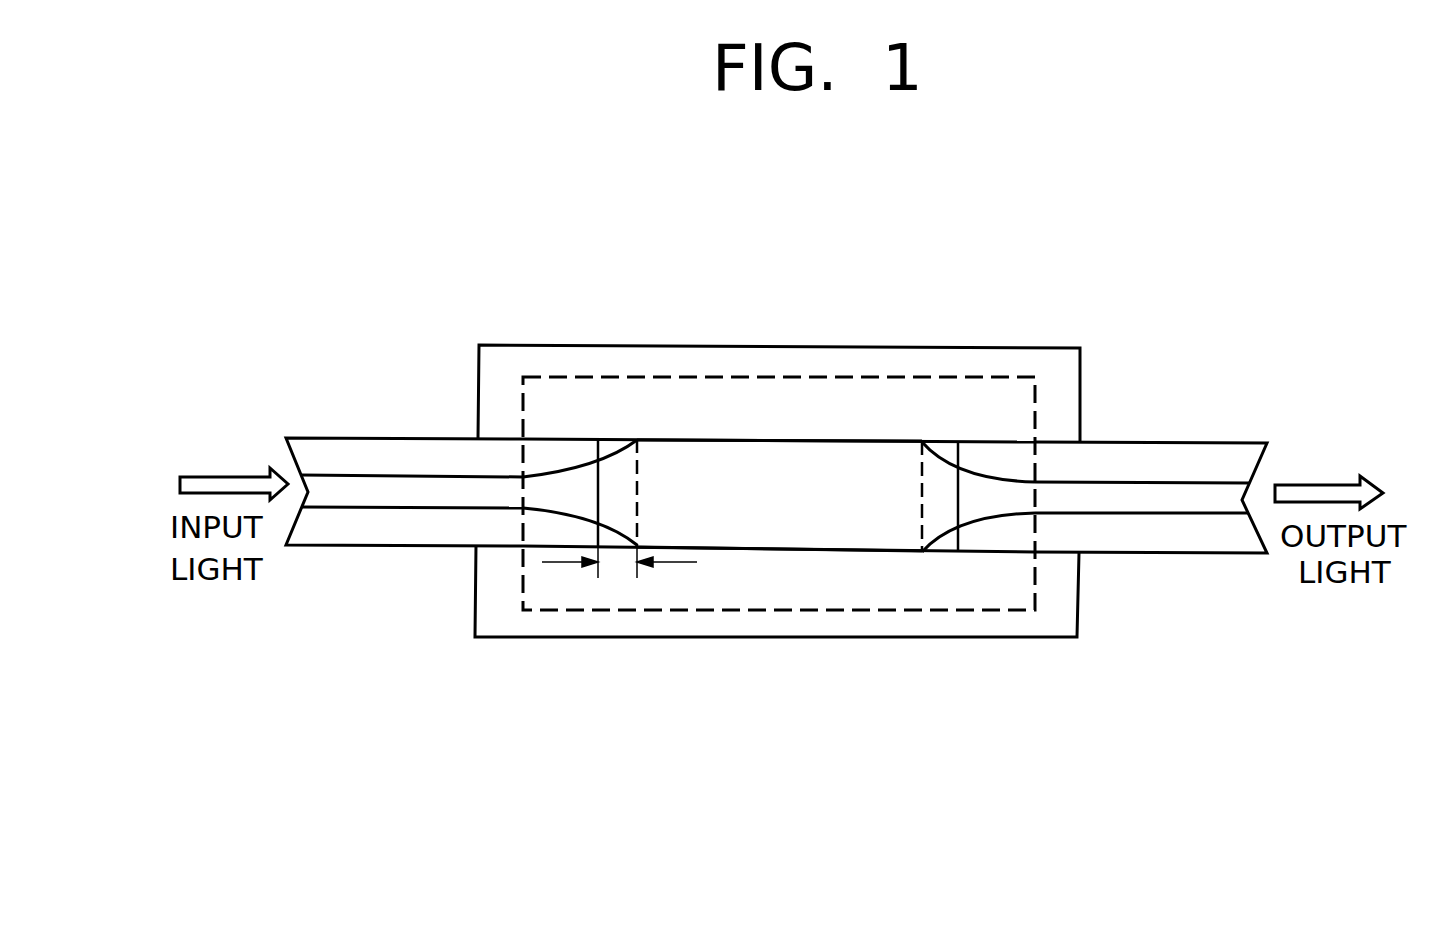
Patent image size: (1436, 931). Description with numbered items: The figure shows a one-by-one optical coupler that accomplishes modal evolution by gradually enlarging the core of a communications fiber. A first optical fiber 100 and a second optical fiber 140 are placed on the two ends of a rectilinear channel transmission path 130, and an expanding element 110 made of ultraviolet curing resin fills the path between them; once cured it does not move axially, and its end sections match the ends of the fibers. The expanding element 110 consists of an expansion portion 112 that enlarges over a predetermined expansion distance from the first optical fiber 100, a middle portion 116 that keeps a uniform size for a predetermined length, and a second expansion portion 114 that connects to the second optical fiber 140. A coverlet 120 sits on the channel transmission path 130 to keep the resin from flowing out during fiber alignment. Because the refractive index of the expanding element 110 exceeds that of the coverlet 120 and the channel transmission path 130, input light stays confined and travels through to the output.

The first optical fiber 100 is at (348, 453).
The expanding element 110 is at (962, 270).
The expansion portion 112 is at (622, 462).
The expansion portion 114 is at (937, 465).
The middle portion 116 is at (762, 450).
The coverlet 120 is at (998, 380).
The channel transmission path 130 is at (508, 353).
The second optical fiber 140 is at (1157, 483).